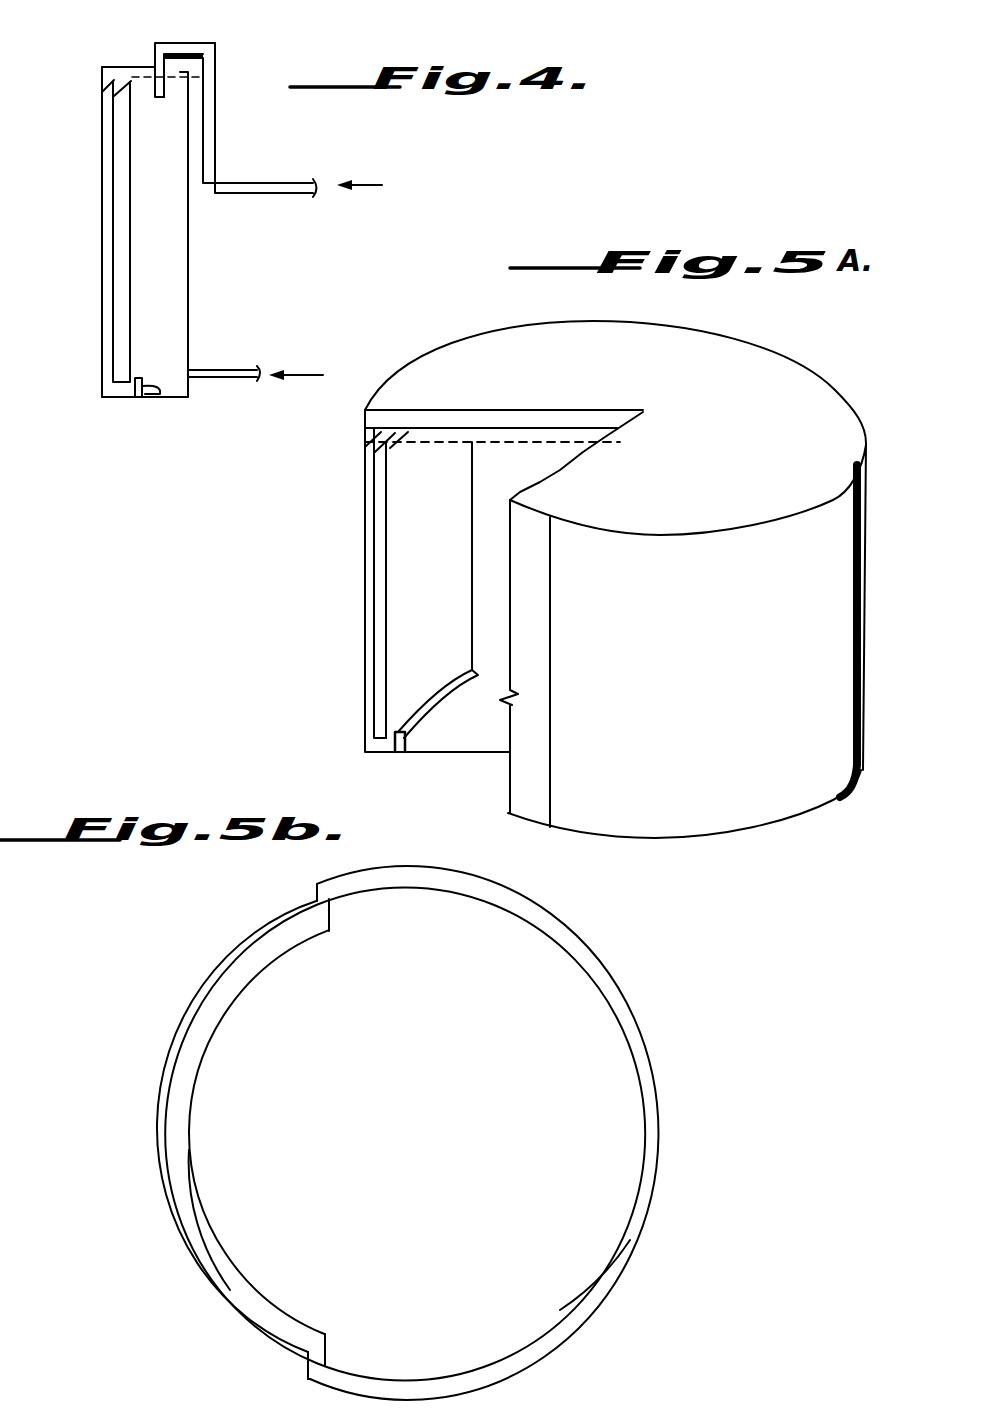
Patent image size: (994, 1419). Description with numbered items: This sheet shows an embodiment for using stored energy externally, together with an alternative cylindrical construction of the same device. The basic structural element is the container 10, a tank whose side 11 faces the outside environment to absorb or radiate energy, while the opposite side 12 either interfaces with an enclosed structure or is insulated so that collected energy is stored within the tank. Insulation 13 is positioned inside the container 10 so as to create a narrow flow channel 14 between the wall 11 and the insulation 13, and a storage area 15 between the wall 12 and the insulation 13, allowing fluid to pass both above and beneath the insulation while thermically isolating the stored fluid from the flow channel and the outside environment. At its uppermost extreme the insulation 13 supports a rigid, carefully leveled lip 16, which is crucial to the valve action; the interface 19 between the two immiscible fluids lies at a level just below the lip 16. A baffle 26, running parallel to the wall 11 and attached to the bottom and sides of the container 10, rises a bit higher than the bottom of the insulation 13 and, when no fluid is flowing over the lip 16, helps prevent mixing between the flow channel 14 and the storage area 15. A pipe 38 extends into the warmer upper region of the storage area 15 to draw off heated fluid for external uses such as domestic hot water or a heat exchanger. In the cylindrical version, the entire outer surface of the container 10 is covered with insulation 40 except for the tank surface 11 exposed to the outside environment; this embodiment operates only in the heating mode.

In FIG. 4, the container 10 is at (200, 232).
In FIG. 5A, the container 10 is at (832, 330).
In FIG. 5B, the container 10 is at (680, 1125).
In FIG. 4, the side 11 is at (102, 201).
In FIG. 5A, the side 11 is at (364, 683).
In FIG. 5B, the side 11 is at (186, 1020).
In FIG. 4, the opposite side 12 is at (188, 262).
In FIG. 4, the insulation 13 is at (120, 255).
In FIG. 5A, the insulation 13 is at (378, 578).
In FIG. 5B, the insulation 13 is at (195, 1222).
In FIG. 4, the flow channel 14 is at (102, 165).
In FIG. 5A, the flow channel 14 is at (368, 647).
In FIG. 5B, the flow channel 14 is at (214, 1283).
In FIG. 4, the storage area 15 is at (170, 325).
In FIG. 5A, the storage area 15 is at (488, 683).
In FIG. 5B, the storage area 15 is at (578, 1290).
In FIG. 4, the lip 16 is at (130, 78).
In FIG. 5A, the lip 16 is at (410, 440).
In FIG. 4, the interface 19 is at (182, 84).
In FIG. 5A, the interface 19 is at (506, 442).
In FIG. 4, the baffle 26 is at (161, 405).
In FIG. 5A, the baffle 26 is at (392, 756).
In FIG. 4, the pipe 38 is at (205, 122).
In FIG. 5A, the insulation 40 is at (615, 412).
In FIG. 5B, the insulation 40 is at (645, 1065).